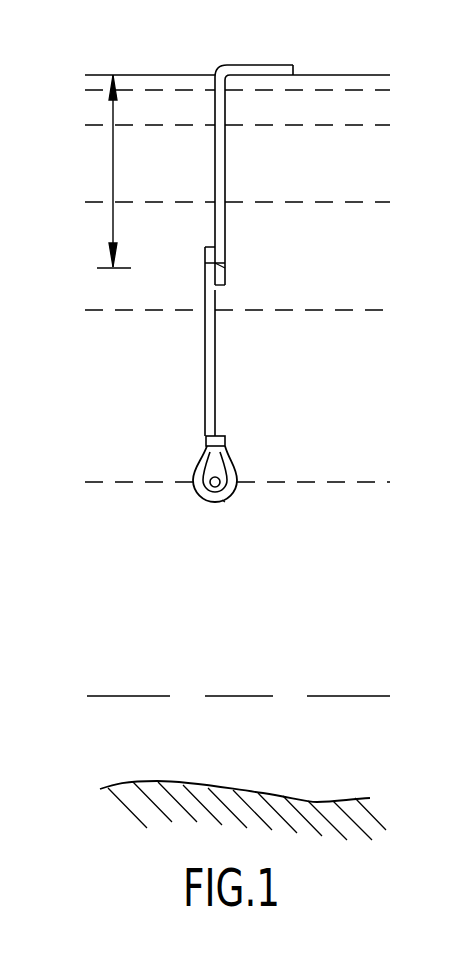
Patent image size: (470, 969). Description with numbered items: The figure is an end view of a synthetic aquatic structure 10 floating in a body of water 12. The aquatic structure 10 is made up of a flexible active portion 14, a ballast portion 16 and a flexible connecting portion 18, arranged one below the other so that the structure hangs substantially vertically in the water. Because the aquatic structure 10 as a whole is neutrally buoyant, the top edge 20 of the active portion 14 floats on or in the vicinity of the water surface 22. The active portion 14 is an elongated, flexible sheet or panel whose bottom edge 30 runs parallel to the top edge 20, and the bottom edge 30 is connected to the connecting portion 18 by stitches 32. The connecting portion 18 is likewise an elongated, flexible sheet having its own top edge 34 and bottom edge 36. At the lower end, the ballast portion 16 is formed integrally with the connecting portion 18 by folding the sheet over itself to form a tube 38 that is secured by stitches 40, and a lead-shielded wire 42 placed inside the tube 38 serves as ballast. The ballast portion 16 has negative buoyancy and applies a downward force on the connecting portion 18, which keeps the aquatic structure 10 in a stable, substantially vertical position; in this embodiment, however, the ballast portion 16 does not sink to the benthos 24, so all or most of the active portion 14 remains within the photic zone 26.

The synthetic aquatic structure 10 is at (327, 180).
The body of water 12 is at (366, 598).
The flexible active portion 14 is at (225, 165).
The ballast portion 16 is at (236, 474).
The flexible connecting portion 18 is at (217, 380).
The top edge 20 is at (293, 65).
The water surface 22 is at (148, 75).
The benthos 24 is at (268, 793).
The photic zone 26 is at (113, 242).
The bottom edge 30 is at (218, 285).
The stitches 32 is at (222, 263).
The top edge 34 is at (205, 253).
The bottom edge 36 is at (225, 440).
The tube 38 is at (225, 500).
The stitches 40 is at (205, 452).
The lead-shielded wire 42 is at (210, 488).